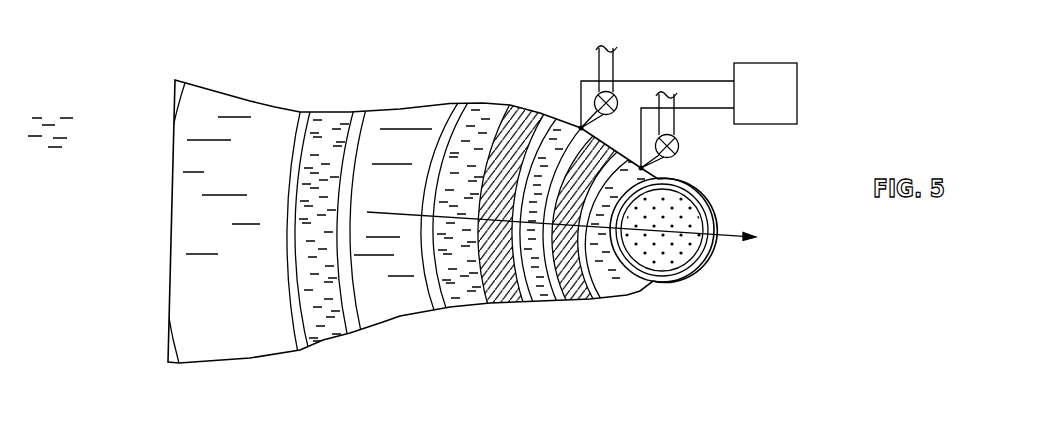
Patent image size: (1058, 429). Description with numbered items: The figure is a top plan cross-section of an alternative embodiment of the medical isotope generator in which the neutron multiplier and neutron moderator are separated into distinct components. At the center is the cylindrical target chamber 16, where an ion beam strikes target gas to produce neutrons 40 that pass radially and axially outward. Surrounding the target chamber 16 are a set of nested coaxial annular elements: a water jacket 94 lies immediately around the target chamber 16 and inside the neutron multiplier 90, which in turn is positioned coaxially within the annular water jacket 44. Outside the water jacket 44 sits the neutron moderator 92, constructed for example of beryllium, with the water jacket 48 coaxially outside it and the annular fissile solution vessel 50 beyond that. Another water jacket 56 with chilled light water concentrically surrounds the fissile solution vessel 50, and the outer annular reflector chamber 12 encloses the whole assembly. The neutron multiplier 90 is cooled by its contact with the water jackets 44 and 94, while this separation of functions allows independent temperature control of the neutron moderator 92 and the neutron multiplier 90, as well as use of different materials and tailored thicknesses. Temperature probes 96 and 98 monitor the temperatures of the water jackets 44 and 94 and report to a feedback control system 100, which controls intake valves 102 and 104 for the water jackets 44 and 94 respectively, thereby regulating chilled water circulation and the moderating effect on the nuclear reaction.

The annular reflector chamber 12 is at (227, 345).
The target chamber 16 is at (673, 260).
The neutrons 40 is at (736, 252).
The annular water jacket 44 is at (548, 298).
The water jacket 48 is at (465, 303).
The annular fissile solution vessel 50 is at (401, 307).
The water jacket 56 is at (322, 331).
The neutron multiplier 90 is at (592, 300).
The neutron moderator 92 is at (500, 300).
The water jacket 94 is at (637, 295).
The temperature probe 96 is at (581, 128).
The temperature probe 98 is at (643, 169).
The feedback control system 100 is at (798, 91).
The intake valve 102 is at (618, 77).
The intake valve 104 is at (678, 118).